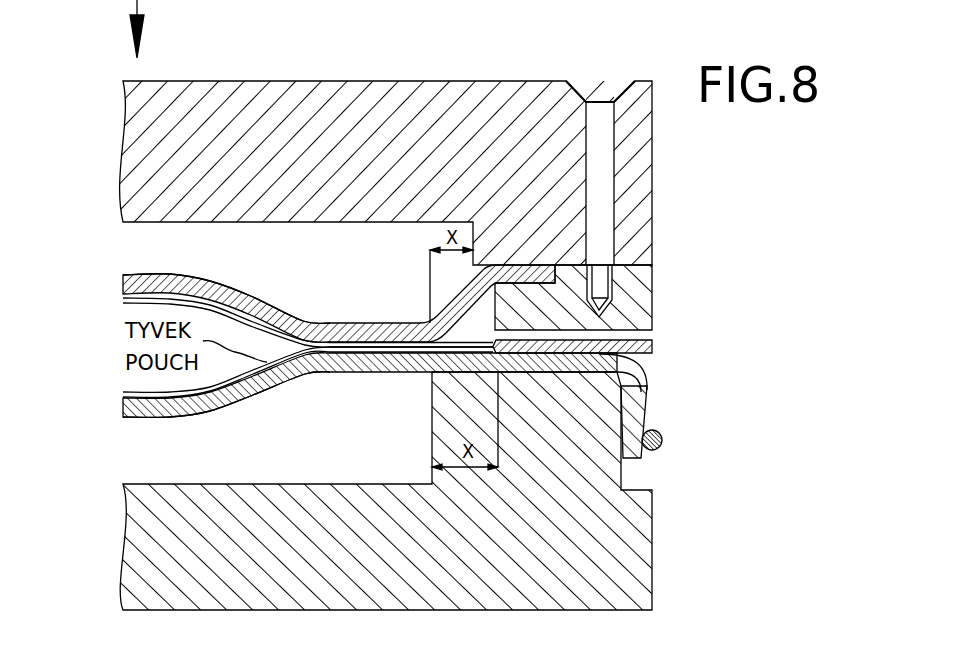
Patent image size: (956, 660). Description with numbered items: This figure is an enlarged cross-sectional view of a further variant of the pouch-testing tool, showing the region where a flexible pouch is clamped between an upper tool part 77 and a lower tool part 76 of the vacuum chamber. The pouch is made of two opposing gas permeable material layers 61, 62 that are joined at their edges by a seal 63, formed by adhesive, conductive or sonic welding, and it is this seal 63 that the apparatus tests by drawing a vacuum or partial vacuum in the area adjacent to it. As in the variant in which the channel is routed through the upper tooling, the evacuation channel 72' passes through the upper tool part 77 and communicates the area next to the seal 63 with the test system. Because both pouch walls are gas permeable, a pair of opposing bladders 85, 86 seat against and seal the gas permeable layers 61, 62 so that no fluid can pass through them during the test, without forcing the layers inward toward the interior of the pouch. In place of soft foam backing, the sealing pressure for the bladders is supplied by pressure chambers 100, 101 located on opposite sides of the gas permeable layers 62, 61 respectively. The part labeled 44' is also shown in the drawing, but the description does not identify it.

The upper tool part 77 is at (508, 121).
The lower tool part 76 is at (637, 570).
The evacuation channel 72' is at (605, 295).
The lid 44' is at (612, 359).
The pressure chamber 100 is at (341, 266).
The pressure chamber 101 is at (337, 442).
The gas permeable material layer 62 is at (198, 304).
The gas permeable material layer 61 is at (128, 394).
The bladder 86 is at (138, 280).
The bladder 85 is at (165, 418).
The seal 63 is at (368, 347).